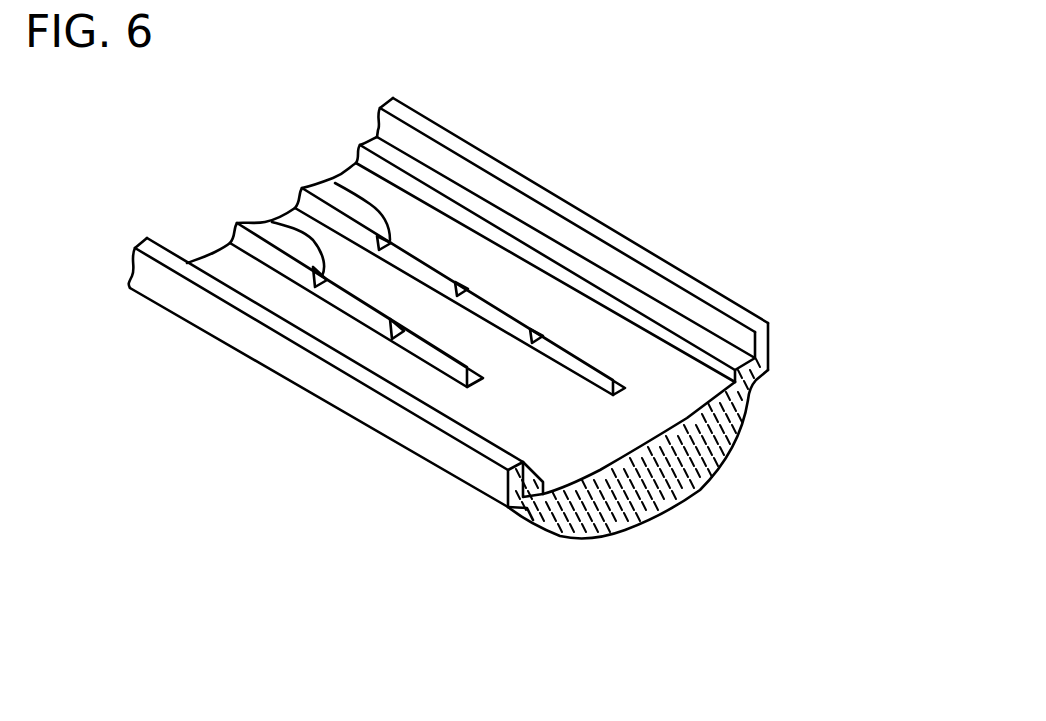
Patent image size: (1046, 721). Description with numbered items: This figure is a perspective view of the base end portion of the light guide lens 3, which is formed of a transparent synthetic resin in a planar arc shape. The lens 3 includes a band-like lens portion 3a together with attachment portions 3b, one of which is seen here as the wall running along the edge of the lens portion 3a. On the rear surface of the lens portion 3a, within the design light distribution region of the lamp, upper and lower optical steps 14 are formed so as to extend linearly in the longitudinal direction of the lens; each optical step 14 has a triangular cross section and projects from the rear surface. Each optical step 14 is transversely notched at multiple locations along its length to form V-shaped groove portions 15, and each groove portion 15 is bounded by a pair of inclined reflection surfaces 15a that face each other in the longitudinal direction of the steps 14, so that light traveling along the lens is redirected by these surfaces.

The light guide lens 3 is at (362, 425).
The lens portion 3a is at (680, 495).
The attachment portion 3b is at (588, 215).
The optical step 14 is at (580, 372).
The V-shaped groove portion 15 is at (271, 222).
The inclined reflection surface 15a is at (463, 282).